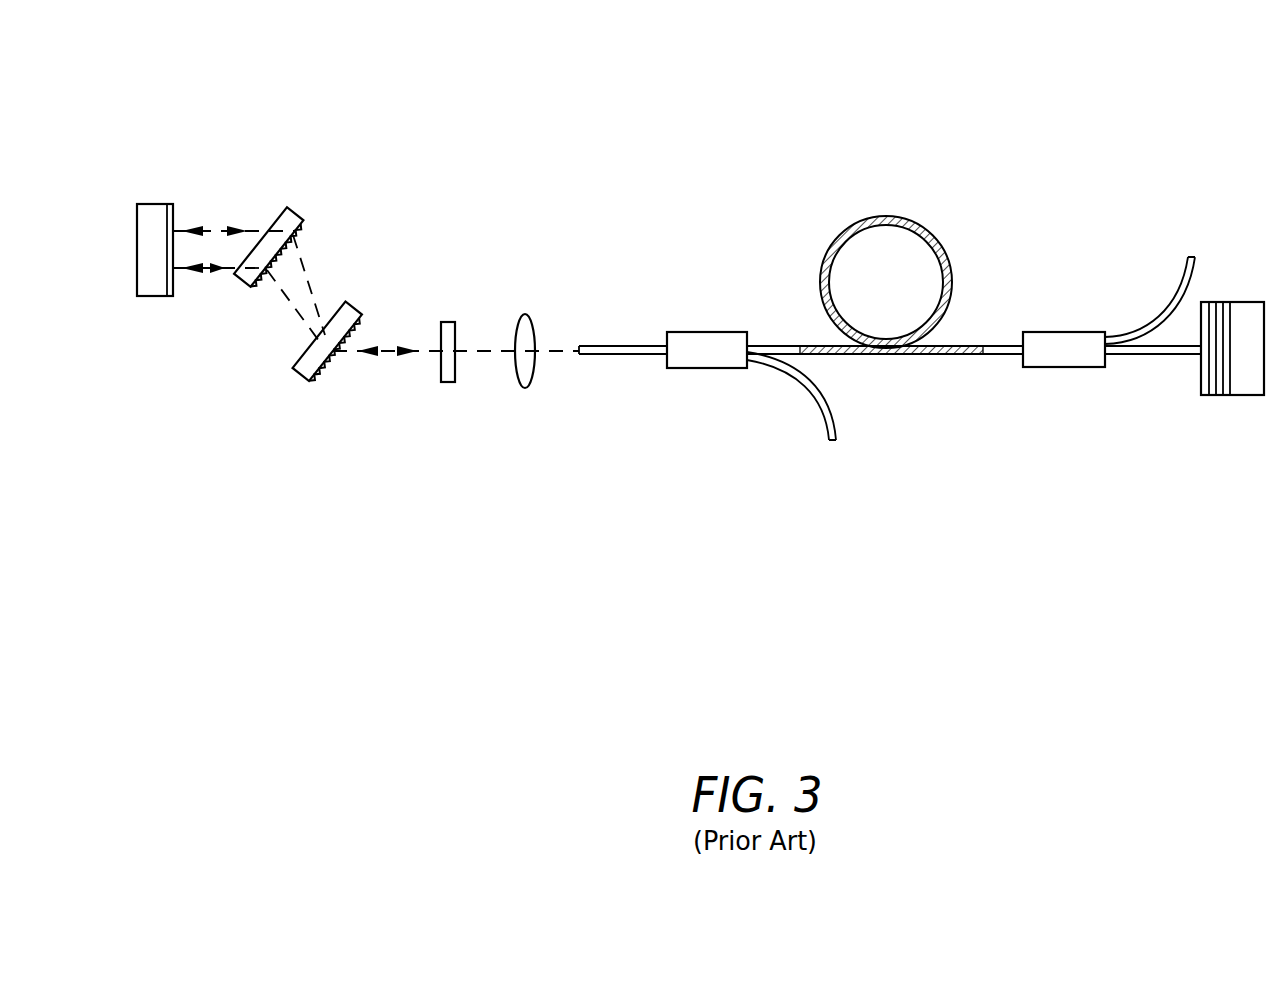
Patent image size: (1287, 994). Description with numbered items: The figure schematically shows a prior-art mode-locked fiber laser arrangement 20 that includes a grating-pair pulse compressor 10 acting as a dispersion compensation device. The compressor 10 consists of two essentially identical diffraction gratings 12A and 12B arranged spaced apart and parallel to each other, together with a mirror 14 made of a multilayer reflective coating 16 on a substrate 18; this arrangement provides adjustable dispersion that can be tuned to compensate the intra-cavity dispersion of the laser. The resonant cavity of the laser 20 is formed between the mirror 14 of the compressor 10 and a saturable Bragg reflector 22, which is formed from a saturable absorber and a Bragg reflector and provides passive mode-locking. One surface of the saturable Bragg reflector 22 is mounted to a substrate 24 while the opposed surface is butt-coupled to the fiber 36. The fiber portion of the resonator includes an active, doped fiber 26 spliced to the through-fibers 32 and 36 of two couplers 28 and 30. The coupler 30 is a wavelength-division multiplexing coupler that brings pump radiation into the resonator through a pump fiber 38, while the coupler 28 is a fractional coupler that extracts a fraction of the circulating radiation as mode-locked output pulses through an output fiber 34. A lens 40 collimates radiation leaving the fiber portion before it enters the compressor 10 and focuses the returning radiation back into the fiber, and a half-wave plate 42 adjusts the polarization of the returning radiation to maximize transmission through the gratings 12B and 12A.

The compressor 10 is at (223, 365).
The diffraction grating 12A is at (330, 372).
The diffraction grating 12B is at (310, 234).
The mirror 14 is at (168, 300).
The multilayer reflective coating 16 is at (175, 212).
The substrate 18 is at (152, 208).
The mode-locked fiber laser arrangement 20 is at (612, 592).
The saturable Bragg reflector 22 is at (1215, 402).
The reflector substrate 24 is at (1242, 393).
The active fiber 26 is at (930, 227).
The fractional coupler 28 is at (707, 328).
The WDM coupler 30 is at (1065, 370).
The through-fiber 32 is at (783, 340).
The output fiber 34 is at (792, 383).
The through-fiber 36 is at (998, 338).
The pump fiber 38 is at (1153, 310).
The lens 40 is at (523, 387).
The half-wave plate 42 is at (460, 318).